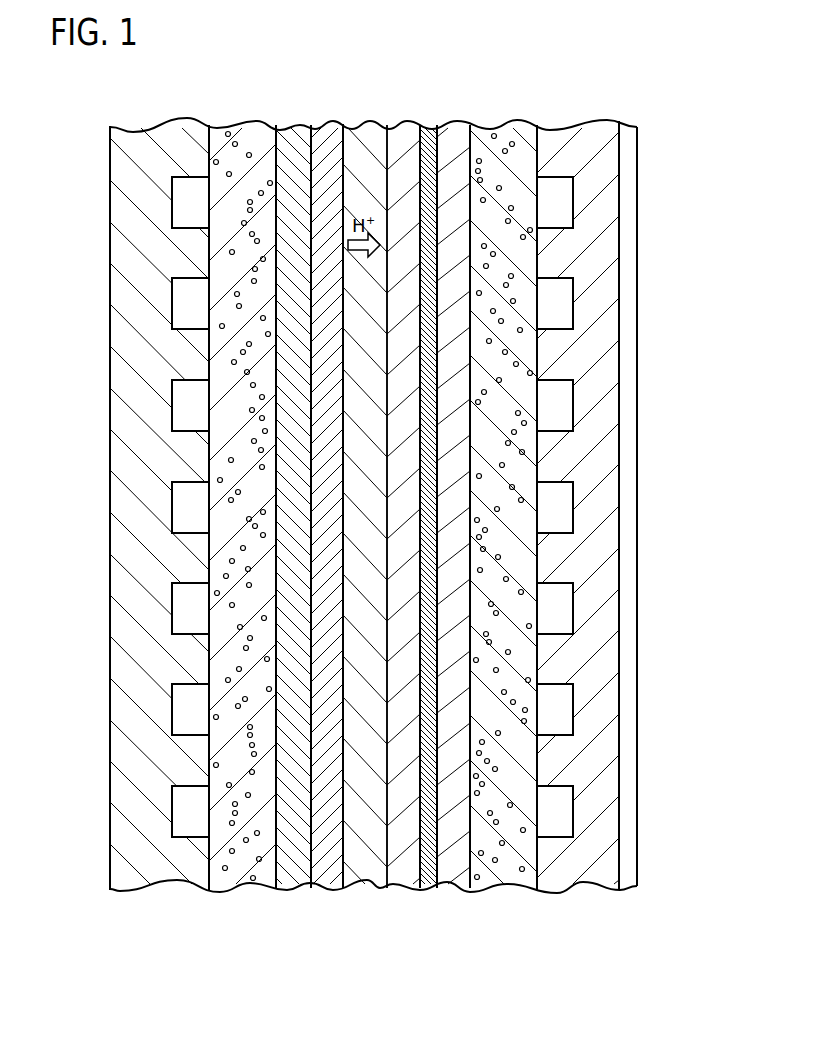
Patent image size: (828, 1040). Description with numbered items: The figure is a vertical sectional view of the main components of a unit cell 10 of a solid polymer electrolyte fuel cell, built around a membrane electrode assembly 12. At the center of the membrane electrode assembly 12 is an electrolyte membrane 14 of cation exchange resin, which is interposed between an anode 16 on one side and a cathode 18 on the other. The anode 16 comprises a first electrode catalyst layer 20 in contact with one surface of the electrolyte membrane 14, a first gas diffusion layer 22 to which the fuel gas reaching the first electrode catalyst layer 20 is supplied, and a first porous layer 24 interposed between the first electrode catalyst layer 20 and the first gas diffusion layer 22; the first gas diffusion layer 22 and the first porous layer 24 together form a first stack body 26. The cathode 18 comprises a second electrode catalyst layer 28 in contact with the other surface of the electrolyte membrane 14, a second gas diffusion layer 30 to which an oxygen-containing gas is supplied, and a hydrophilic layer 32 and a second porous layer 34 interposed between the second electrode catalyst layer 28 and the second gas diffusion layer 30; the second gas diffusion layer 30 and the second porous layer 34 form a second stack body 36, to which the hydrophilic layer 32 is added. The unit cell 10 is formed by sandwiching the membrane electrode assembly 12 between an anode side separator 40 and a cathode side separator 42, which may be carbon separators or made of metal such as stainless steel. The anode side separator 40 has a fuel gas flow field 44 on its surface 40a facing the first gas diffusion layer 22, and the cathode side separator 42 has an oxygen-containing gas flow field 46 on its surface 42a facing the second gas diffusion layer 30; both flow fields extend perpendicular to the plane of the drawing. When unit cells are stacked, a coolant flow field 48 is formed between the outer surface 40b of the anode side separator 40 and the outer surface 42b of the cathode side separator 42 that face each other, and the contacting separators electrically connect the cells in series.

The unit cell 10 is at (584, 74).
The membrane electrode assembly 12 is at (488, 76).
The electrolyte membrane 14 is at (372, 866).
The anode 16 is at (247, 976).
The cathode 18 is at (393, 976).
The first electrode catalyst layer 20 is at (323, 862).
The first gas diffusion layer 22 is at (240, 872).
The first porous layer 24 is at (290, 862).
The first stack body 26 is at (307, 943).
The second electrode catalyst layer 28 is at (406, 863).
The second gas diffusion layer 30 is at (505, 863).
The hydrophilic layer 32 is at (430, 130).
The second porous layer 34 is at (457, 868).
The second stack body 36 is at (523, 943).
The anode side separator 40 is at (140, 153).
The surface of anode side separator 40a is at (222, 132).
The surface of anode side separator 40b is at (110, 406).
The cathode side separator 42 is at (607, 148).
The surface of cathode side separator 42a is at (528, 134).
The surface of cathode side separator 42b is at (637, 258).
The fuel gas flow field 44 is at (185, 208).
The oxygen-containing gas flow field 46 is at (562, 196).
The coolant flow field 48 is at (628, 316).